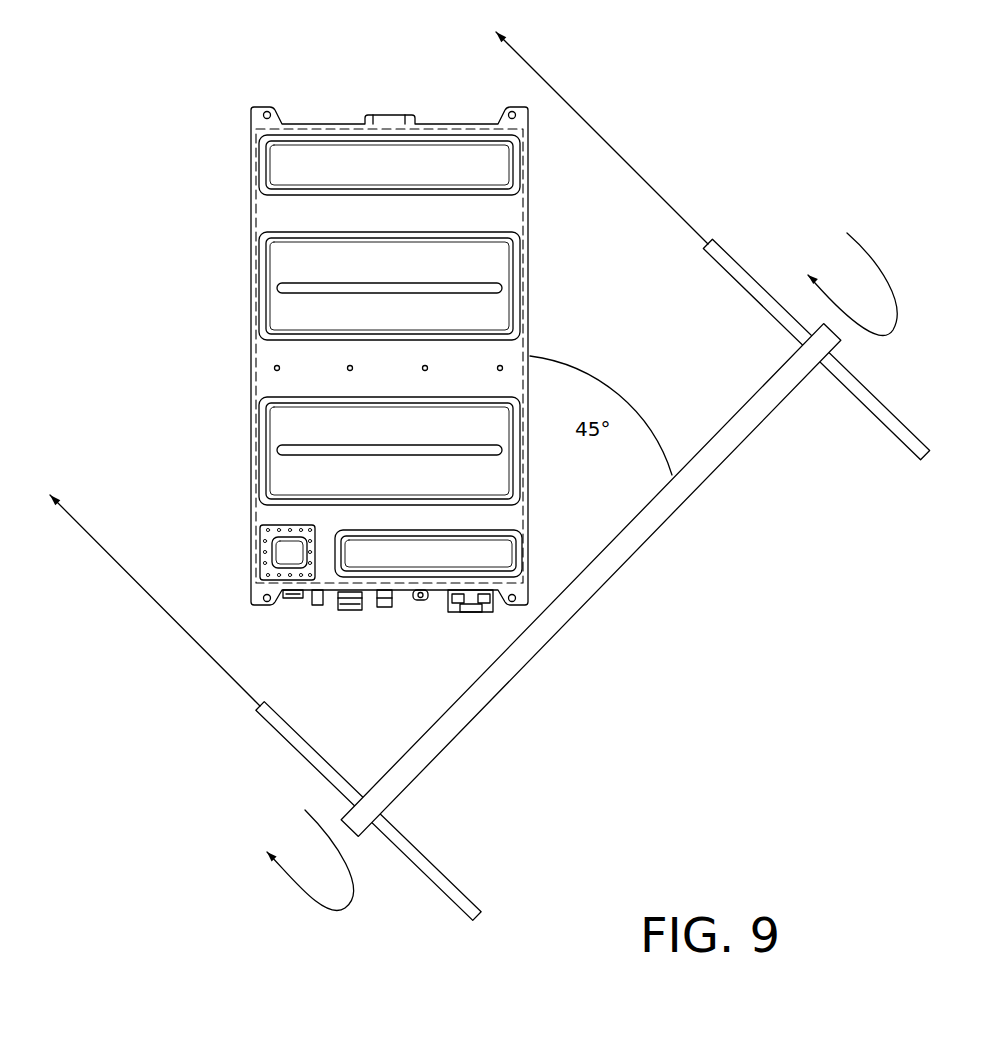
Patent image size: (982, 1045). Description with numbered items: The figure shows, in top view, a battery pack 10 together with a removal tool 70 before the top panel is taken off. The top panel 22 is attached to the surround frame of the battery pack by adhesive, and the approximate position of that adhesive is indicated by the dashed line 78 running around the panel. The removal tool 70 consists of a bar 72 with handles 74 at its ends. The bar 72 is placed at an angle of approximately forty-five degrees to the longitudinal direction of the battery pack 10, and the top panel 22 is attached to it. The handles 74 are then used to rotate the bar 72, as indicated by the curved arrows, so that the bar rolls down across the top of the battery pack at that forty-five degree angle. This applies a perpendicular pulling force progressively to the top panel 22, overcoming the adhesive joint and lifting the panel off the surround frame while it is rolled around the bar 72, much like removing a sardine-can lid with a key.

The battery pack 10 is at (197, 311).
The top panel 22 is at (273, 378).
The dashed line 78 is at (250, 203).
The removal tool 70 is at (658, 628).
The bar 72 is at (490, 702).
The handles 74 is at (457, 909).